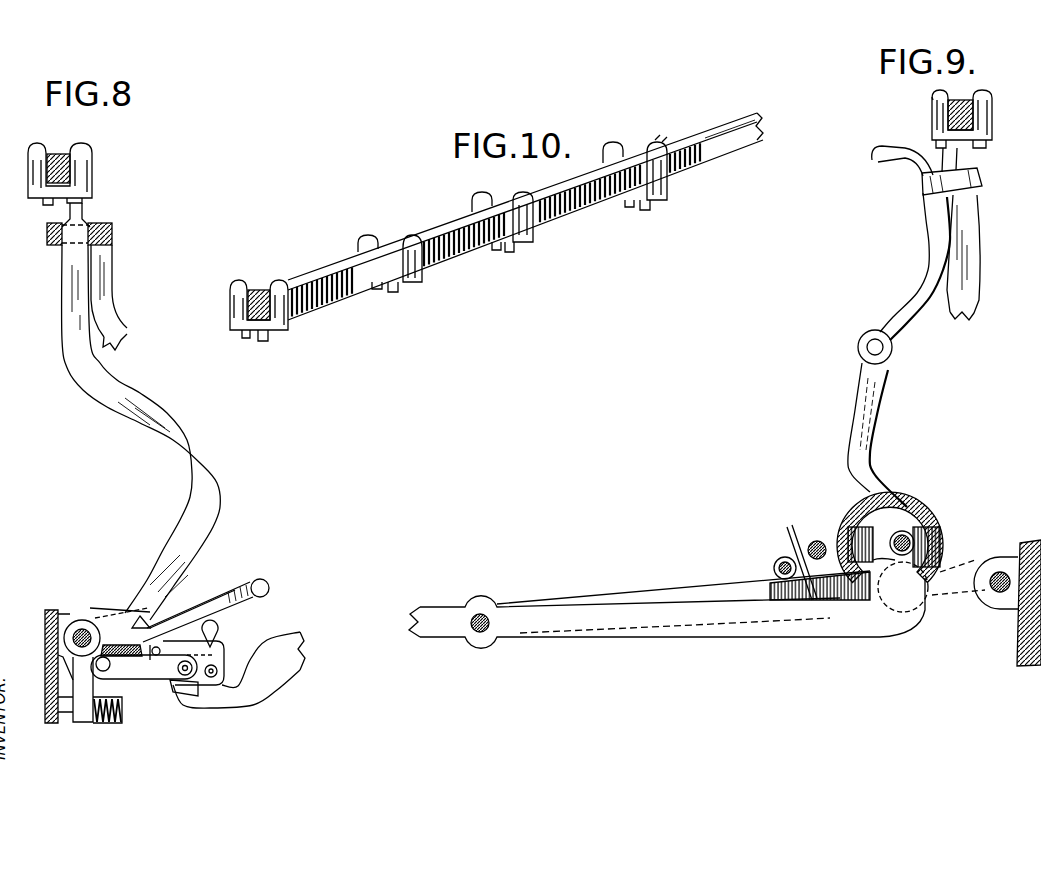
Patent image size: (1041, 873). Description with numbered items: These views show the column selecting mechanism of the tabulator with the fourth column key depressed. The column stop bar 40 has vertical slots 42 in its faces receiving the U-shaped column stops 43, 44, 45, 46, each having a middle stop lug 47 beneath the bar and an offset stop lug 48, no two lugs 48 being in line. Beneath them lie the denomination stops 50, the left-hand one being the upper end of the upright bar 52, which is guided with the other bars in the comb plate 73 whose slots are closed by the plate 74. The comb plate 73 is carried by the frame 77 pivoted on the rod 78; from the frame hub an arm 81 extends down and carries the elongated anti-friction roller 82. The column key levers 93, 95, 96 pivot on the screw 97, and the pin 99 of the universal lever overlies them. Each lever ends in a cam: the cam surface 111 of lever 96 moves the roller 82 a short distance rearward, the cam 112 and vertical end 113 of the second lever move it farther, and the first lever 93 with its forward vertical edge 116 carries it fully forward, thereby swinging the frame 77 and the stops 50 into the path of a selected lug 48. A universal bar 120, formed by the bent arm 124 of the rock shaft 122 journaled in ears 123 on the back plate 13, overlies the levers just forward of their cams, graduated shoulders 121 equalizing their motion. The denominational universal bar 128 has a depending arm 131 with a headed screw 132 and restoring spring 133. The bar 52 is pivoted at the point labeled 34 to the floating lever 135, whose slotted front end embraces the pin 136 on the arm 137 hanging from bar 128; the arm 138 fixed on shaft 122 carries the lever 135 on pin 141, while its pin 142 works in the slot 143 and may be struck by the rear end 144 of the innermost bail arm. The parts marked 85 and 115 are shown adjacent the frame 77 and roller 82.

In FIG. 8, the back plate 13 is at (48, 610).
In FIG. 9, the back plate 13 is at (1017, 654).
In FIG. 8, the link 34 is at (112, 675).
In FIG. 8, the column stop bar 40 is at (58, 143).
In FIG. 10, the column stop bar 40 is at (717, 119).
In FIG. 9, the column stop bar 40 is at (958, 99).
In FIG. 10, the vertical slots 42 is at (659, 130).
In FIG. 10, the column stop 43 is at (288, 330).
In FIG. 9, the column stop 43 is at (932, 97).
In FIG. 10, the column stop 44 is at (420, 280).
In FIG. 10, the column stop 45 is at (529, 242).
In FIG. 10, the column stop 46 is at (665, 184).
In FIG. 8, the stop lug 47 is at (62, 197).
In FIG. 10, the stop lug 47 is at (260, 341).
In FIG. 9, the stop lug 47 is at (952, 181).
In FIG. 8, the stop lug 48 is at (92, 194).
In FIG. 10, the stop lug 48 is at (247, 337).
In FIG. 9, the stop lug 48 is at (936, 146).
In FIG. 8, the denomination stop 50 is at (73, 210).
In FIG. 9, the denomination stop 50 is at (955, 160).
In FIG. 8, the upright bar 52 is at (217, 488).
In FIG. 9, the upright bar 52 is at (963, 257).
In FIG. 8, the guide piece 73 is at (97, 223).
In FIG. 8, the plate 74 is at (47, 235).
In FIG. 8, the frame 77 is at (107, 295).
In FIG. 9, the frame 77 is at (924, 247).
In FIG. 9, the rod 78 is at (858, 350).
In FIG. 9, the arm 81 is at (882, 392).
In FIG. 9, the anti-friction roller 82 is at (905, 530).
In FIG. 9, the hook 85 is at (879, 162).
In FIG. 9, the key lever 93 is at (695, 636).
In FIG. 9, the key lever 95 is at (840, 520).
In FIG. 9, the key lever 96 is at (694, 590).
In FIG. 9, the pivot screw 97 is at (480, 613).
In FIG. 9, the pin 99 is at (778, 560).
In FIG. 9, the cam surface 111 is at (882, 535).
In FIG. 9, the cam 112 is at (928, 525).
In FIG. 9, the vertical end 113 is at (945, 566).
In FIG. 9, the roller 115 is at (888, 590).
In FIG. 9, the forward vertical edge 116 is at (880, 600).
In FIG. 8, the universal bar 120 is at (268, 586).
In FIG. 9, the universal bar 120 is at (817, 541).
In FIG. 9, the shoulders 121 is at (788, 534).
In FIG. 8, the rock shaft 122 is at (82, 628).
In FIG. 9, the rock shaft 122 is at (992, 591).
In FIG. 8, the ears 123 is at (92, 620).
In FIG. 9, the ears 123 is at (983, 562).
In FIG. 8, the arm 124 is at (238, 585).
In FIG. 8, the universal bar 128 is at (215, 625).
In FIG. 8, the depending arm 131 is at (87, 722).
In FIG. 8, the headed screw 132 is at (121, 722).
In FIG. 8, the restoring spring 133 is at (110, 722).
In FIG. 8, the floating lever 135 is at (150, 672).
In FIG. 8, the pin 136 is at (217, 668).
In FIG. 8, the arm 137 is at (221, 643).
In FIG. 8, the arm 138 is at (168, 685).
In FIG. 8, the pin 141 is at (141, 622).
In FIG. 8, the pin 142 is at (187, 645).
In FIG. 8, the slot 143 is at (178, 676).
In FIG. 8, the rear end 144 is at (236, 707).